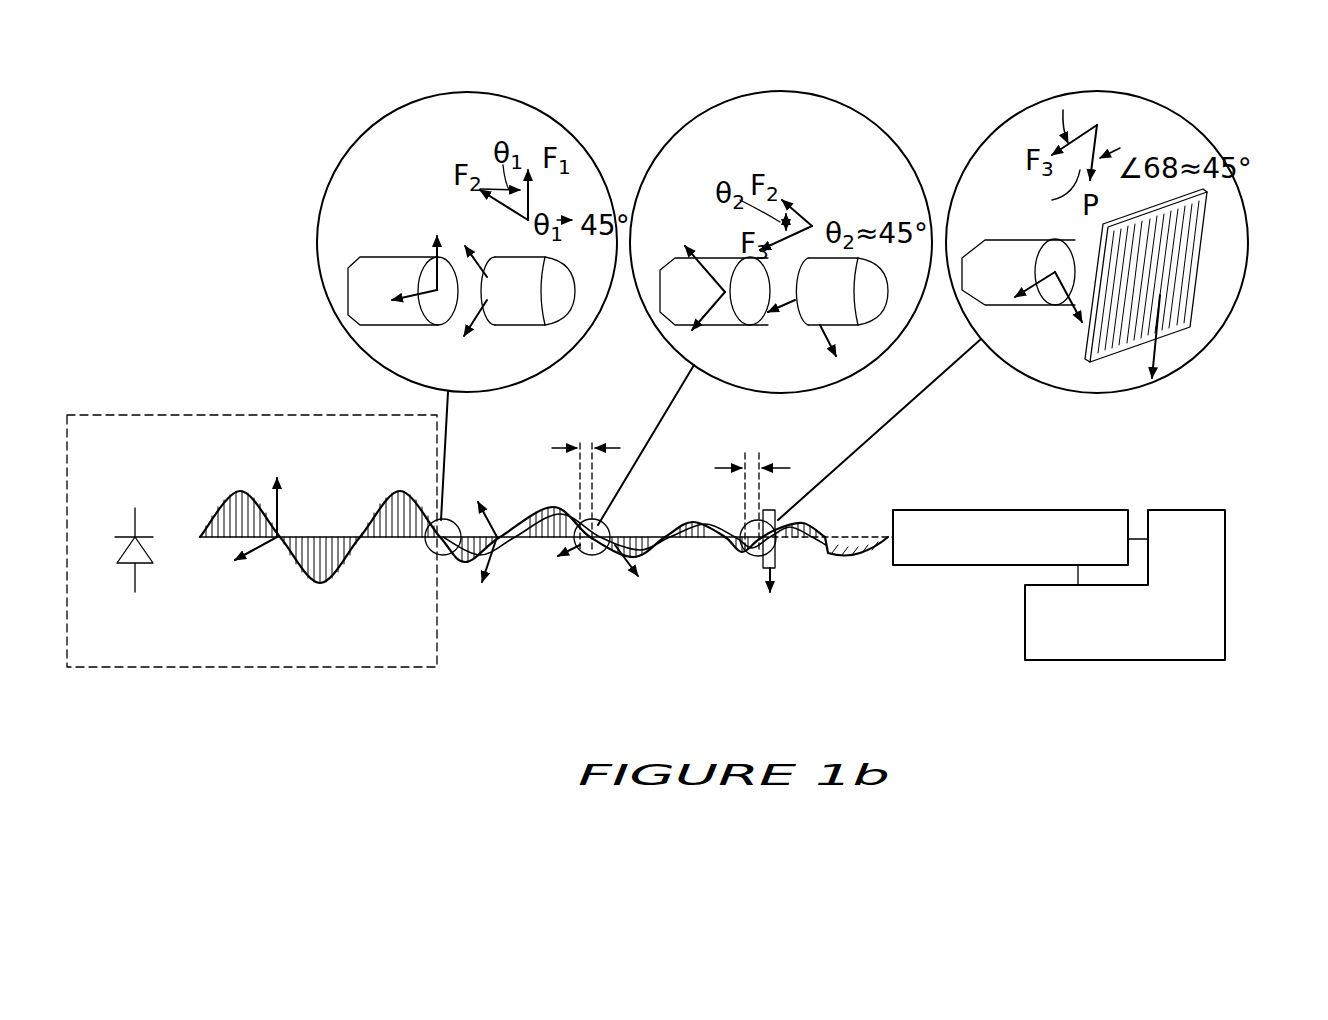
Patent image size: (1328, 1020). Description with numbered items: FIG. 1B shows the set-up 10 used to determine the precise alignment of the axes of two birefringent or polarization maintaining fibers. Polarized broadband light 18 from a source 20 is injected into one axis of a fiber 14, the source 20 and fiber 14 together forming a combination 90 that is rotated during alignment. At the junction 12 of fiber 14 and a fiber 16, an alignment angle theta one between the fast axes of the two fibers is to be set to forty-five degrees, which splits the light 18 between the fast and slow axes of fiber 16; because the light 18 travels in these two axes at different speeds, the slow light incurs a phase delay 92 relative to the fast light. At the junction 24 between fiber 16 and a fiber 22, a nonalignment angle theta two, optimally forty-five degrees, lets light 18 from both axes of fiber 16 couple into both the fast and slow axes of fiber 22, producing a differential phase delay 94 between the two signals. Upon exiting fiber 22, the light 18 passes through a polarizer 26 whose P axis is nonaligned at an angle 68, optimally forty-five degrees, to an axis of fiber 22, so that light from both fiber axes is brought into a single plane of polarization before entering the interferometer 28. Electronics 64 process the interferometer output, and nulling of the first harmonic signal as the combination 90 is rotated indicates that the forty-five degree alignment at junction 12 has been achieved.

The set-up 10 is at (878, 628).
The junction 12 is at (420, 547).
The fiber 14 is at (300, 527).
The fiber 16 is at (530, 540).
The polarized broadband light 18 is at (400, 496).
The source 20 is at (128, 568).
The fiber 22 is at (643, 540).
The junction 24 is at (592, 556).
The polarizer 26 is at (768, 510).
The interferometer 28 is at (1010, 510).
The electronics 64 is at (1225, 587).
The angle 68 is at (752, 560).
The combination 90 is at (150, 412).
The phase delay 92 is at (558, 448).
The differential phase delay 94 is at (775, 468).